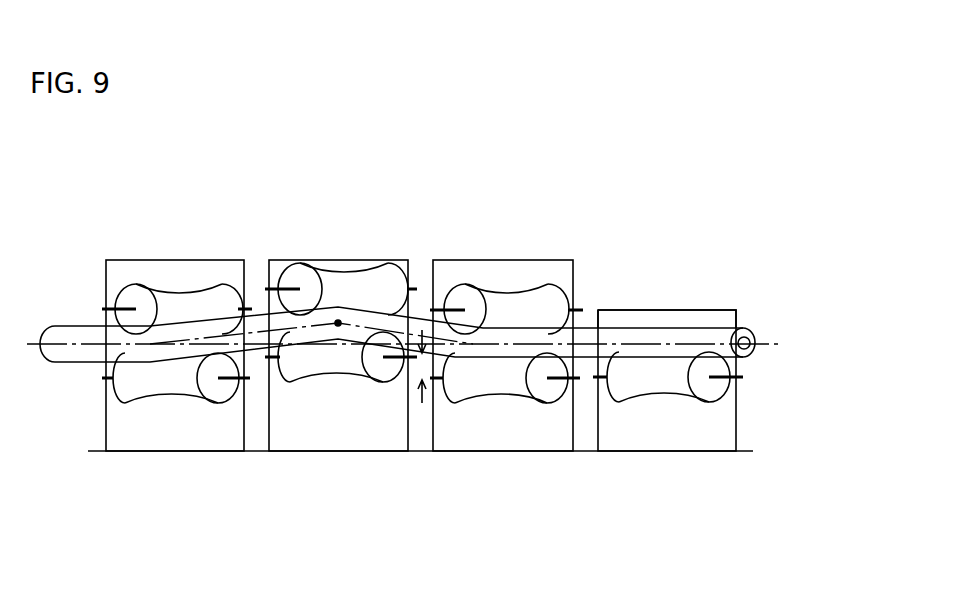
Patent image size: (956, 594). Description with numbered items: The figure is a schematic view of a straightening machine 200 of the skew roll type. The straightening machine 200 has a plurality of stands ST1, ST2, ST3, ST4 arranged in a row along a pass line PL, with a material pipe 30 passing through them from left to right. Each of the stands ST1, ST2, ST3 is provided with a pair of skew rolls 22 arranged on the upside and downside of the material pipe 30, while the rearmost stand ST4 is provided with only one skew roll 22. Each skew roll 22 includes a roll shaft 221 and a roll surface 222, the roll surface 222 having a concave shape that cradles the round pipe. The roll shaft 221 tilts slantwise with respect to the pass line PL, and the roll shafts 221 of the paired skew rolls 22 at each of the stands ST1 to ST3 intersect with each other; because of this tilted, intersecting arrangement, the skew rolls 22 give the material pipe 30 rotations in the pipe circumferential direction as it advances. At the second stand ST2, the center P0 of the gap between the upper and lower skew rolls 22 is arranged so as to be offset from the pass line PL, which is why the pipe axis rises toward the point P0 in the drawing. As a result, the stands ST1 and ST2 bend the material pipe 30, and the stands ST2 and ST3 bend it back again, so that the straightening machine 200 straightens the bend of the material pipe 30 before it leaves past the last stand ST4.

The straightening machine 200 is at (383, 152).
The skew roll 22 is at (391, 337).
The roll shaft 221 is at (108, 304).
The roll surface 222 is at (170, 290).
The material pipe 30 is at (653, 337).
The pass line PL is at (65, 345).
The center of gap between skew rolls P0 is at (341, 322).
The stand ST1 is at (206, 260).
The stand ST2 is at (375, 258).
The stand ST3 is at (482, 260).
The stand ST4 is at (707, 310).